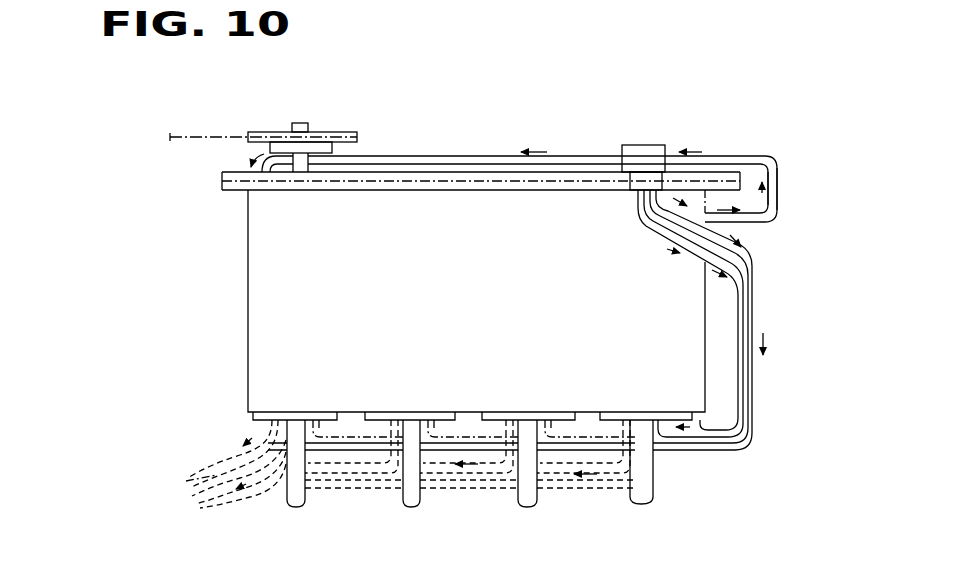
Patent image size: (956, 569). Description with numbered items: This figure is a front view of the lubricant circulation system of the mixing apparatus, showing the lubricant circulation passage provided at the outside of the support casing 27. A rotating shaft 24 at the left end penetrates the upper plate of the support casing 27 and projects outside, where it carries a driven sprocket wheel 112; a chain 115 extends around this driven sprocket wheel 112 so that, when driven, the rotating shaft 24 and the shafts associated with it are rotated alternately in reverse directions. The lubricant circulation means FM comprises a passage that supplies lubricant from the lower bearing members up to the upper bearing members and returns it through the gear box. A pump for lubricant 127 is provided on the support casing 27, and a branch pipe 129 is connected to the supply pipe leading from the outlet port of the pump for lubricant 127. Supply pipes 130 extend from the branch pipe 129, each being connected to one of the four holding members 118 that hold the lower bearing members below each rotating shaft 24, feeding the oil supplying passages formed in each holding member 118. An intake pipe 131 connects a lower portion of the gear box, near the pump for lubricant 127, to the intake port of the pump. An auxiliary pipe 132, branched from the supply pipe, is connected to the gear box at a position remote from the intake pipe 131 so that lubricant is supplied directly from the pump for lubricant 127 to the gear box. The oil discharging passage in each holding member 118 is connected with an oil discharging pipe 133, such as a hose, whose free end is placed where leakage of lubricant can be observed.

The support casing 27 is at (246, 325).
The chain 115 is at (193, 135).
The driven sprocket wheel 112 is at (340, 130).
The auxiliary pipe 132 is at (468, 158).
The intake pipe 131 is at (737, 223).
The lubricant circulation means FM is at (721, 151).
The pump for lubricant 127 is at (635, 143).
The branch pipe 129 is at (638, 190).
The supply pipes 130 is at (668, 243).
The holding member 118 is at (297, 415).
The rotating shaft 24 is at (313, 507).
The oil discharging pipe 133 is at (585, 490).